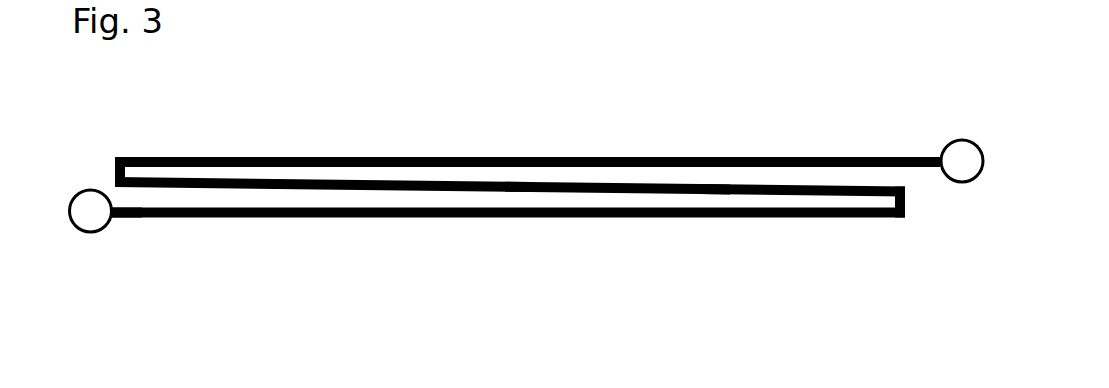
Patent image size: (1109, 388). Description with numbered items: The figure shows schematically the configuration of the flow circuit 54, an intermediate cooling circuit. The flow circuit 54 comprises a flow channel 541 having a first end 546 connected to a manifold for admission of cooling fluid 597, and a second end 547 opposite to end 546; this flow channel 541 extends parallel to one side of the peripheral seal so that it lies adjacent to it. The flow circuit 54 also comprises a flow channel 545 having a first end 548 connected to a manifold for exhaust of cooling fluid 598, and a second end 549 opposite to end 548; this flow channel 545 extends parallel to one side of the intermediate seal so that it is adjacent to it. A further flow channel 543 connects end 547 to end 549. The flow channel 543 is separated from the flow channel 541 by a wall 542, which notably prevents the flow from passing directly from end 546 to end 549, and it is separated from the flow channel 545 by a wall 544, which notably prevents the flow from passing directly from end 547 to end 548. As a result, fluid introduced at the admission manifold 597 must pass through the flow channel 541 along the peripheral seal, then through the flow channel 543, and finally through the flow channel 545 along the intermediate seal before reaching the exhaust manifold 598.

The flow circuit 54 is at (517, 134).
The flow channel 541 is at (617, 157).
The wall 542 is at (400, 180).
The flow channel 543 is at (716, 185).
The wall 544 is at (517, 192).
The flow channel 545 is at (382, 218).
The first end 546 is at (926, 150).
The second end 547 is at (137, 157).
The first end 548 is at (127, 218).
The second end 549 is at (895, 218).
The manifold for admission of cooling fluid 597 is at (962, 140).
The manifold for exhaust of cooling fluid 598 is at (91, 233).